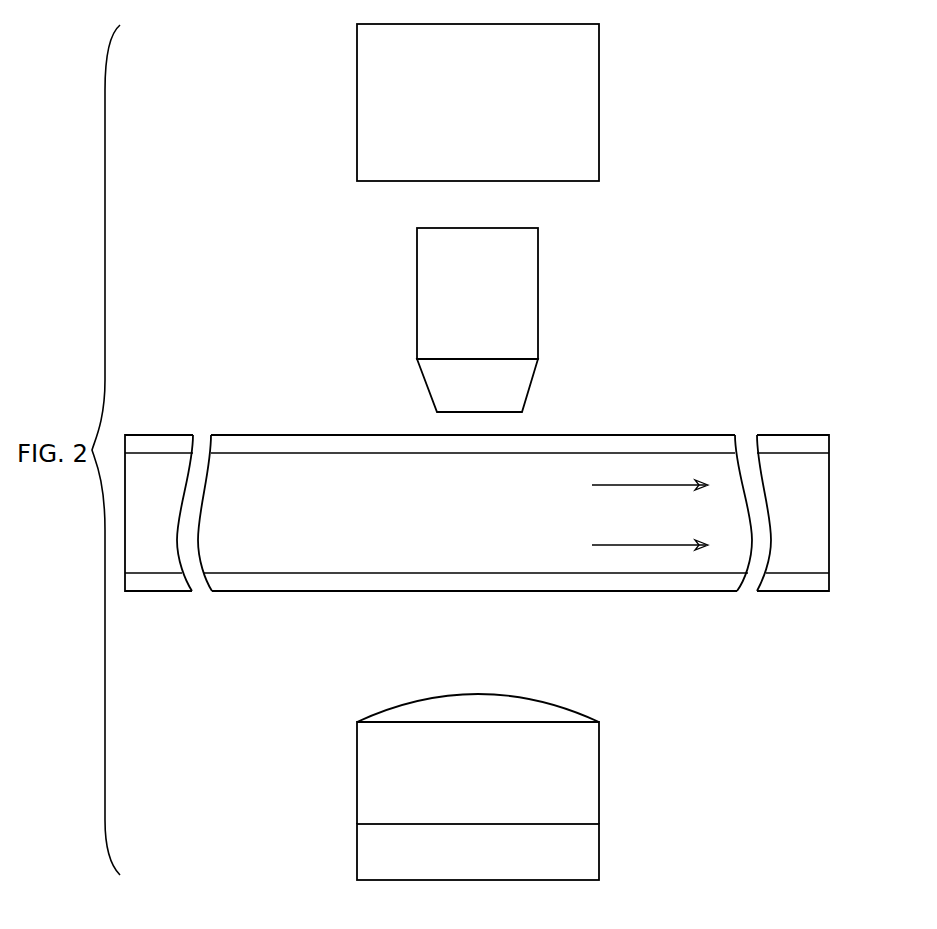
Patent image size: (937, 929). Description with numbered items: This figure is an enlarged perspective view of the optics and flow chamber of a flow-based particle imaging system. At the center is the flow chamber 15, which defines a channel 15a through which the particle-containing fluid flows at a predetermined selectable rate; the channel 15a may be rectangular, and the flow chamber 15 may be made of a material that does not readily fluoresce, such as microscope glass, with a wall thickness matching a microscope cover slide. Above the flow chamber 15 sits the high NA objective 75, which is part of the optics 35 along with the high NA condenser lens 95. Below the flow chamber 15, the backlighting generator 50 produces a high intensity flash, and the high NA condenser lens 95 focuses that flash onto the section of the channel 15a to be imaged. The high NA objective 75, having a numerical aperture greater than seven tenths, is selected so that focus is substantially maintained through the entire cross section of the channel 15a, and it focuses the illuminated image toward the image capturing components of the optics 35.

The optics 35 is at (599, 100).
The high NA objective 75 is at (538, 290).
The flow chamber 15 is at (658, 434).
The channel 15a is at (557, 523).
The high NA condenser lens 95 is at (563, 783).
The backlighting generator 50 is at (548, 865).